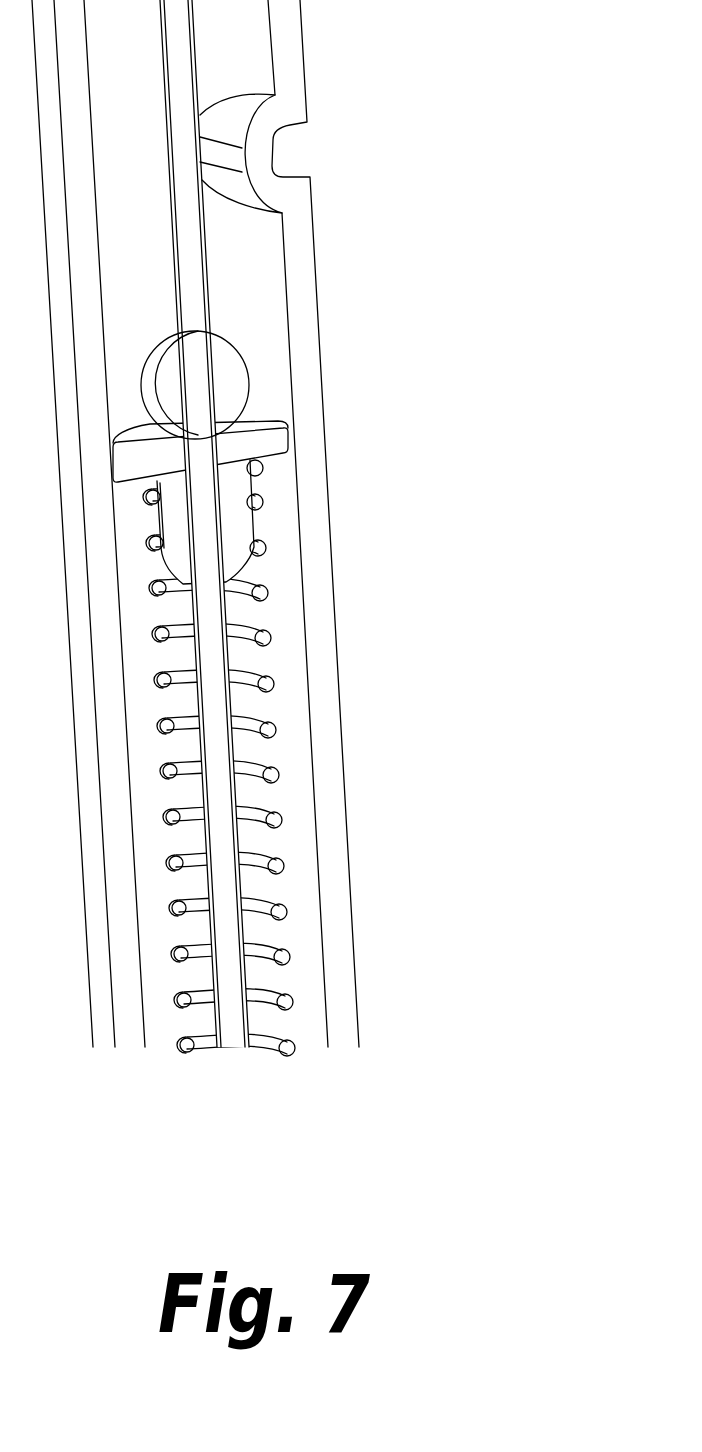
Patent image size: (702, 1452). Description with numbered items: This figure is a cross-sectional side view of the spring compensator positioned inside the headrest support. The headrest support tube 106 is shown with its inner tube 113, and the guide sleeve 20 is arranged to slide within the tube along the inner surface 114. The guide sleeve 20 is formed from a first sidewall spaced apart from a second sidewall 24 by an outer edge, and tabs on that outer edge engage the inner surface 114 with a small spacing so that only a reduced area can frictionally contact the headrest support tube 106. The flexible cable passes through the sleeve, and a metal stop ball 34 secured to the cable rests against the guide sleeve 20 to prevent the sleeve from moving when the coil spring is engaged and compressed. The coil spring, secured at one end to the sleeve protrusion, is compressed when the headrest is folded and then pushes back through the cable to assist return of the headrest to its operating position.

The guide sleeve 20 is at (275, 403).
The second sidewall 24 is at (282, 465).
The metal stop ball 34 is at (245, 330).
The headrest support tube 106 is at (352, 898).
The inner tube 113 is at (358, 982).
The inner surface 114 is at (333, 528).